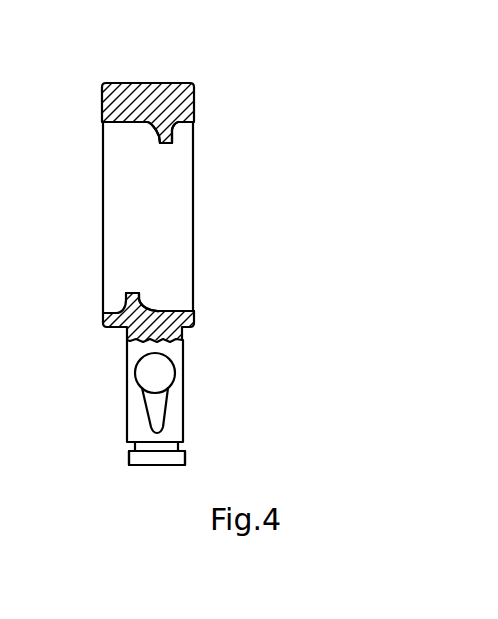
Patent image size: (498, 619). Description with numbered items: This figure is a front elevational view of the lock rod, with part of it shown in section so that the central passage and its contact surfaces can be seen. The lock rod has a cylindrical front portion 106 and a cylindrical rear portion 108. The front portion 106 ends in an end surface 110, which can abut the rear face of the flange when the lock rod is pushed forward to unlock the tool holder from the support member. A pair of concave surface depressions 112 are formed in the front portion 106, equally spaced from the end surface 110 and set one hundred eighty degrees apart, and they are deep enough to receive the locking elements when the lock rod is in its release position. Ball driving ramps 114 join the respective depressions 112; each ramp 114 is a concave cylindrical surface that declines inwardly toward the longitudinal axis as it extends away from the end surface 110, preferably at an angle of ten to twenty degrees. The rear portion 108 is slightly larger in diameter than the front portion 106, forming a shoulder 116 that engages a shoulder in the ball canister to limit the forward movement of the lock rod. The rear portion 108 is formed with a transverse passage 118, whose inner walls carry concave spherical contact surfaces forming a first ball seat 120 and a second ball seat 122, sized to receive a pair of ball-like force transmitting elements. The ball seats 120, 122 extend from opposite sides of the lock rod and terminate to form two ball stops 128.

The front portion 106 is at (184, 420).
The rear portion 108 is at (197, 100).
The end surface 110 is at (157, 481).
The concave surface depressions 112 is at (155, 382).
The ball driving ramps 114 is at (162, 410).
The shoulder 116 is at (189, 326).
The transverse passage 118 is at (130, 219).
The first ball seat 120 is at (147, 305).
The second ball seat 122 is at (153, 126).
The ball stops 128 is at (175, 133).